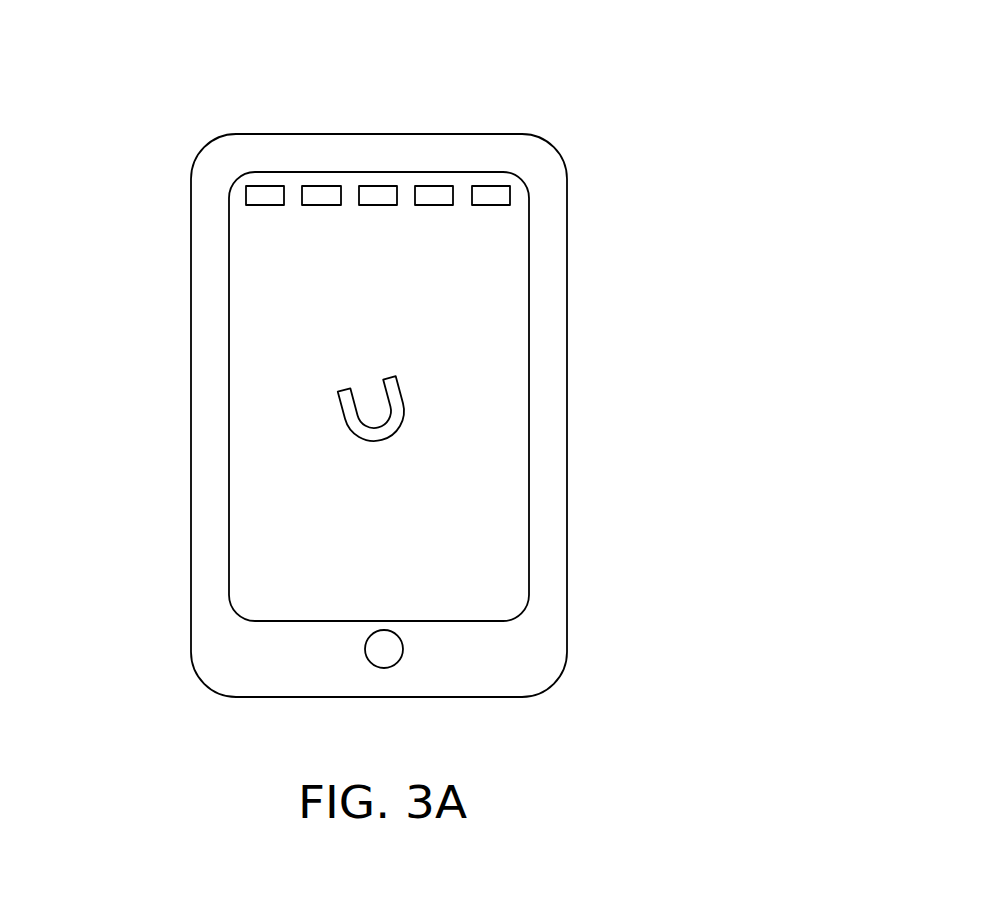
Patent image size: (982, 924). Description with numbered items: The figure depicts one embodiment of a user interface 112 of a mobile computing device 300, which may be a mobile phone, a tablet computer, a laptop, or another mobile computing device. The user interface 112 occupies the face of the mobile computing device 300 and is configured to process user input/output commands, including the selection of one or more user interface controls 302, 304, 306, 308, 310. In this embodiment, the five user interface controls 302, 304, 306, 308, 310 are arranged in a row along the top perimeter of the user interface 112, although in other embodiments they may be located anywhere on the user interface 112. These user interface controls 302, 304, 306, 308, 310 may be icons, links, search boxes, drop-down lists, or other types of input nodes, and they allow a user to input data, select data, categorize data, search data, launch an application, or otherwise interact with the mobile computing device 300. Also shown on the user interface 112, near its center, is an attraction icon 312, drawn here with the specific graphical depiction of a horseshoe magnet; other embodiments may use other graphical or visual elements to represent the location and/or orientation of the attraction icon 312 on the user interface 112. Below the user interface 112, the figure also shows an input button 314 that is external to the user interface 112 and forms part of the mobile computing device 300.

The mobile computing device 300 is at (418, 133).
The user interface 112 is at (303, 467).
The user interface control 302 is at (255, 185).
The user interface control 304 is at (312, 185).
The user interface control 306 is at (392, 185).
The user interface control 308 is at (425, 185).
The user interface control 310 is at (503, 185).
The attraction icon 312 is at (405, 422).
The input button 314 is at (397, 635).